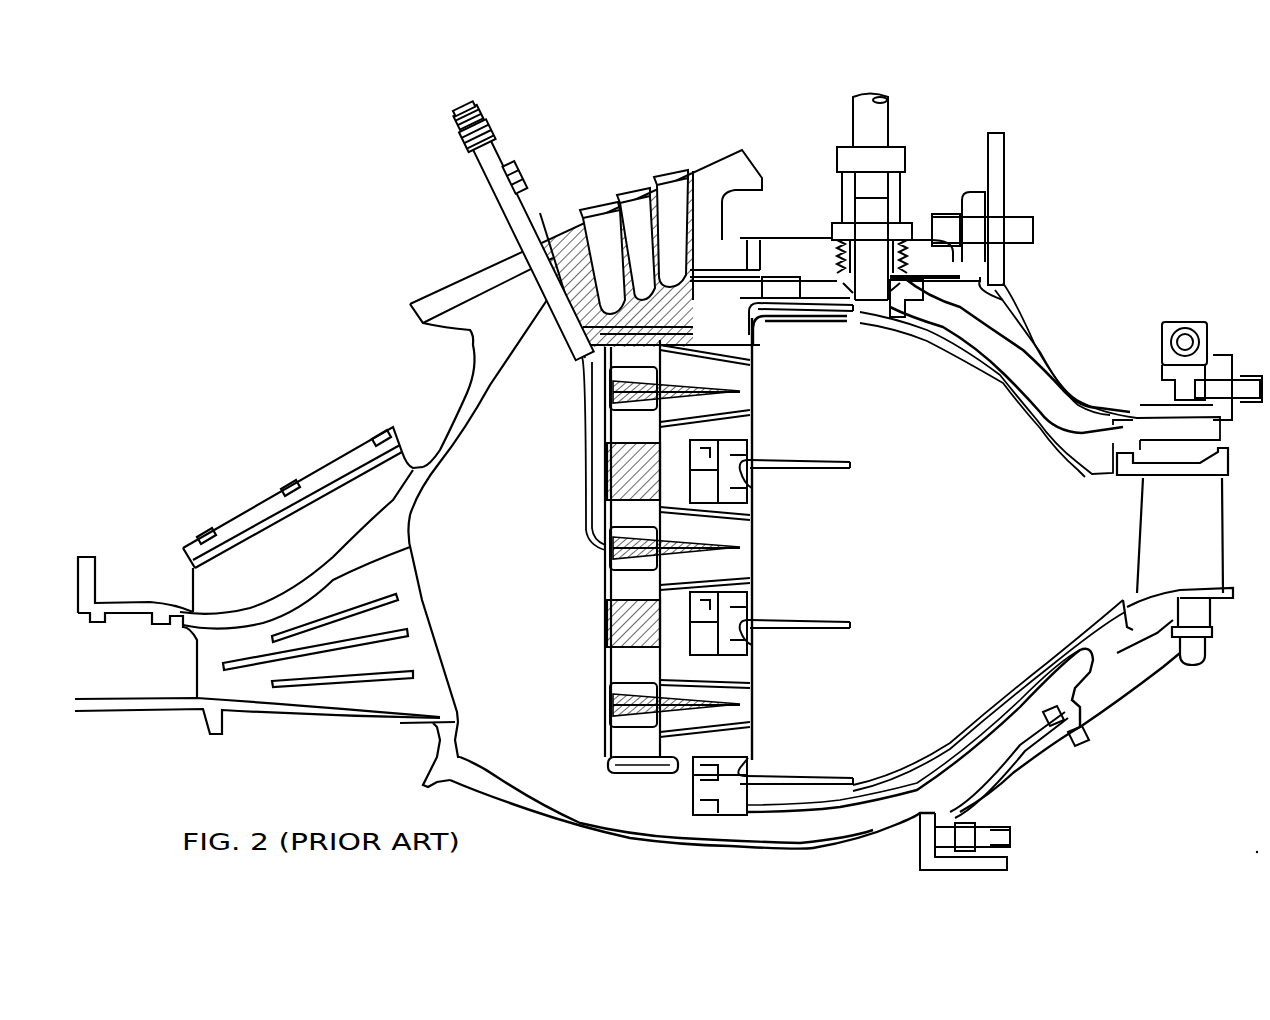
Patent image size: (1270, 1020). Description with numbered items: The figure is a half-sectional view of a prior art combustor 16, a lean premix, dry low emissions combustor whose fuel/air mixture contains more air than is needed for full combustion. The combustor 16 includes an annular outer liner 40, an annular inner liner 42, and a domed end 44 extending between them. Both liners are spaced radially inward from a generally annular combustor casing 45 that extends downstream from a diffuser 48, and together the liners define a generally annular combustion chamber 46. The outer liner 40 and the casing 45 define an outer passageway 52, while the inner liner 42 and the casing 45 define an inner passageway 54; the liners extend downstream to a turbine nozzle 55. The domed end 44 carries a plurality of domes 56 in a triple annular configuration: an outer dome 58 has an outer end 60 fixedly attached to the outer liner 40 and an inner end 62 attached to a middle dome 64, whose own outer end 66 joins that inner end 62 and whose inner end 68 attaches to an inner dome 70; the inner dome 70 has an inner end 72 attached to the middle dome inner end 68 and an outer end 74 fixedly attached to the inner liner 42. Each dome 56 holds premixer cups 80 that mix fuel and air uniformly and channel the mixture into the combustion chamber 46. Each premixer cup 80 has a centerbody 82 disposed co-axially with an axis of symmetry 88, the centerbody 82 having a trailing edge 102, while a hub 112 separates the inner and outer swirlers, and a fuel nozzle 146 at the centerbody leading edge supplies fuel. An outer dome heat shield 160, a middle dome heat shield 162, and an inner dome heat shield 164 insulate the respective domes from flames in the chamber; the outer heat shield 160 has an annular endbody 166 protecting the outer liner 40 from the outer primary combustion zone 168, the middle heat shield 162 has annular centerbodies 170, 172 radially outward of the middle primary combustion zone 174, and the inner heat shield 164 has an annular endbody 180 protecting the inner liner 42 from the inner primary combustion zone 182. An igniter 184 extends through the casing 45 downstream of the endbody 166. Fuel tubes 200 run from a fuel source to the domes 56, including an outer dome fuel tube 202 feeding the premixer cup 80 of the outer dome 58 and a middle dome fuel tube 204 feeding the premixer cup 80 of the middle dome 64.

The combustor 16 is at (293, 230).
The annular outer liner 40 is at (1032, 420).
The annular inner liner 42 is at (1035, 665).
The domed end 44 is at (640, 478).
The combustor casing 45 is at (1043, 760).
The combustion chamber 46 is at (1056, 557).
The diffuser 48 is at (442, 710).
The outer passageway 52 is at (987, 320).
The inner passageway 54 is at (970, 783).
The turbine nozzle 55 is at (1200, 557).
The domes 56 is at (818, 378).
The outer dome 58 is at (818, 417).
The outer end 60 is at (753, 343).
The inner end 62 is at (753, 440).
The middle dome 64 is at (833, 577).
The outer end 66 is at (753, 503).
The inner end 68 is at (760, 592).
The inner dome 70 is at (873, 723).
The inner end 72 is at (760, 663).
The outer end 74 is at (755, 753).
The premixer cup 80 is at (753, 380).
The centerbody 82 is at (755, 400).
The axis of symmetry 88 is at (587, 707).
The trailing edge 102 is at (743, 547).
The hub 112 is at (597, 430).
The fuel nozzle 146 is at (582, 507).
The outer dome heat shield 160 is at (858, 328).
The middle dome heat shield 162 is at (828, 480).
The inner dome heat shield 164 is at (847, 638).
The annular endbody 166 is at (828, 320).
The outer primary combustion zone 168 is at (868, 410).
The heat shield centerbody 170 is at (847, 463).
The heat shield centerbody 172 is at (852, 625).
The middle primary combustion zone 174 is at (856, 563).
The annular endbody 180 is at (820, 773).
The inner primary combustion zone 182 is at (853, 735).
The igniter 184 is at (882, 122).
The fuel tubes 200 is at (362, 120).
The outer dome fuel tube 202 is at (455, 118).
The middle dome fuel tube 204 is at (515, 165).